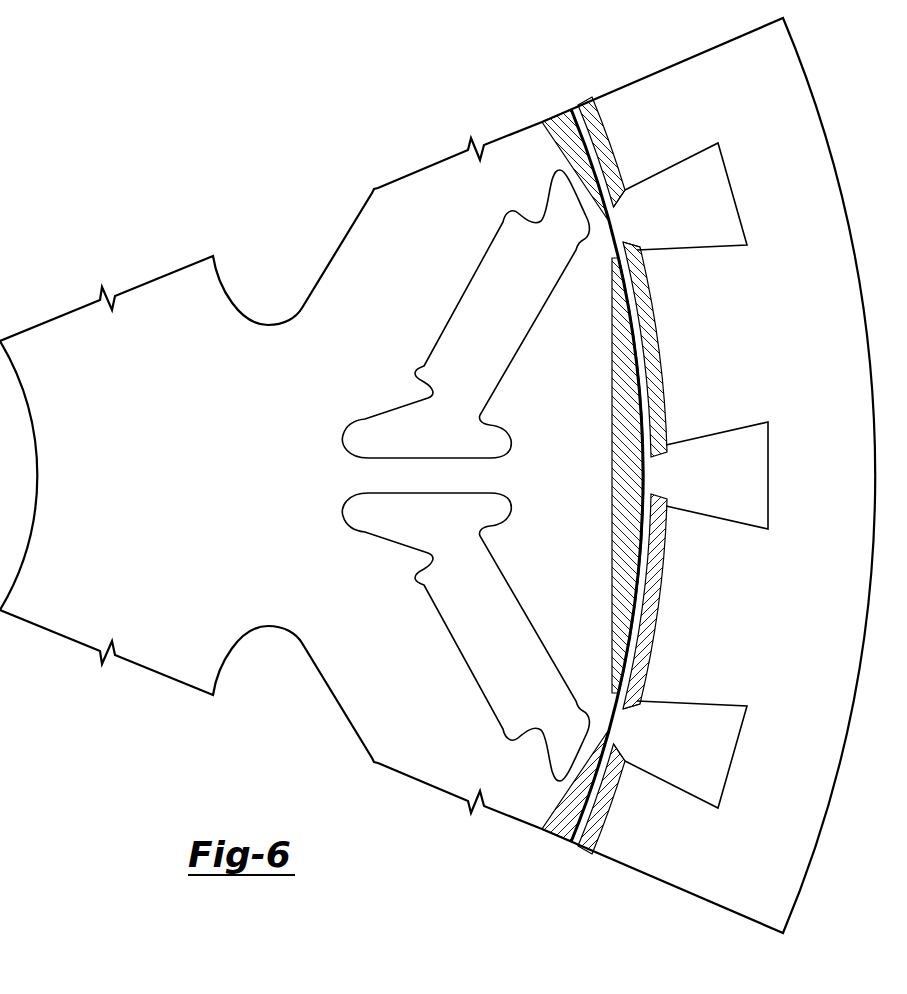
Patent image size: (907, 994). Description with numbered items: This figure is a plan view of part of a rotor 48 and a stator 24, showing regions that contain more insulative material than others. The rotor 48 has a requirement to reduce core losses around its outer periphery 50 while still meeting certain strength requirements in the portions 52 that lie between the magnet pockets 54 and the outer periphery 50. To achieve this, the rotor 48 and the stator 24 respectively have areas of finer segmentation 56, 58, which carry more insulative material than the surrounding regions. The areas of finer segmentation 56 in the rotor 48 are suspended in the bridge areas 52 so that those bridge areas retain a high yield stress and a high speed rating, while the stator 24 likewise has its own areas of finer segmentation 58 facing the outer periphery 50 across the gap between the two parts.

The stator 24 is at (646, 58).
The rotor 48 is at (135, 200).
The outer periphery 50 is at (645, 483).
The portions between magnet pockets and outer periphery 52 is at (597, 223).
The magnet pockets 54 is at (487, 302).
The areas of finer segmentation 56 is at (562, 122).
The areas of finer segmentation 58 is at (600, 142).